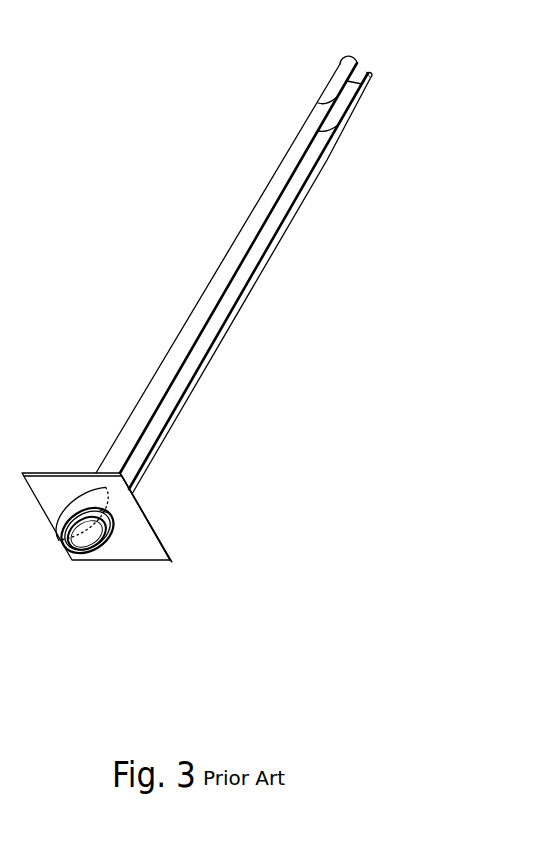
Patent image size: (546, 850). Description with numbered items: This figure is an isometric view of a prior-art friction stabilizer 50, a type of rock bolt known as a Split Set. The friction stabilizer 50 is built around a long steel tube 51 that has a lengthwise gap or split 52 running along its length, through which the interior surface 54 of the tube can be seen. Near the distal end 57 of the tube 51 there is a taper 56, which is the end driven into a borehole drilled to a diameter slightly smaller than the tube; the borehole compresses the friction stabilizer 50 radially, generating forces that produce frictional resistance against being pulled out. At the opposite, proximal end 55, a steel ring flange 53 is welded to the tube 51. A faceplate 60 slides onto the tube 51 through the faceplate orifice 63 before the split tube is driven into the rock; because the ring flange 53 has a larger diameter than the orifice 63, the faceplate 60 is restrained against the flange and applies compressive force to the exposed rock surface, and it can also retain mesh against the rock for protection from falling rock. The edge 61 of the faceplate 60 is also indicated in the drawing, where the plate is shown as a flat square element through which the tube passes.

The friction stabilizer 50 is at (312, 413).
The steel tube 51 is at (283, 168).
The lengthwise gap or split 52 is at (267, 253).
The interior surface 54 is at (228, 301).
The proximal end 55 is at (76, 543).
The taper 56 is at (357, 106).
The distal end 57 is at (380, 46).
The faceplate 60 is at (76, 440).
The plate edge 61 is at (150, 555).
The faceplate orifice 63 is at (110, 517).
The steel ring flange 53 is at (114, 542).